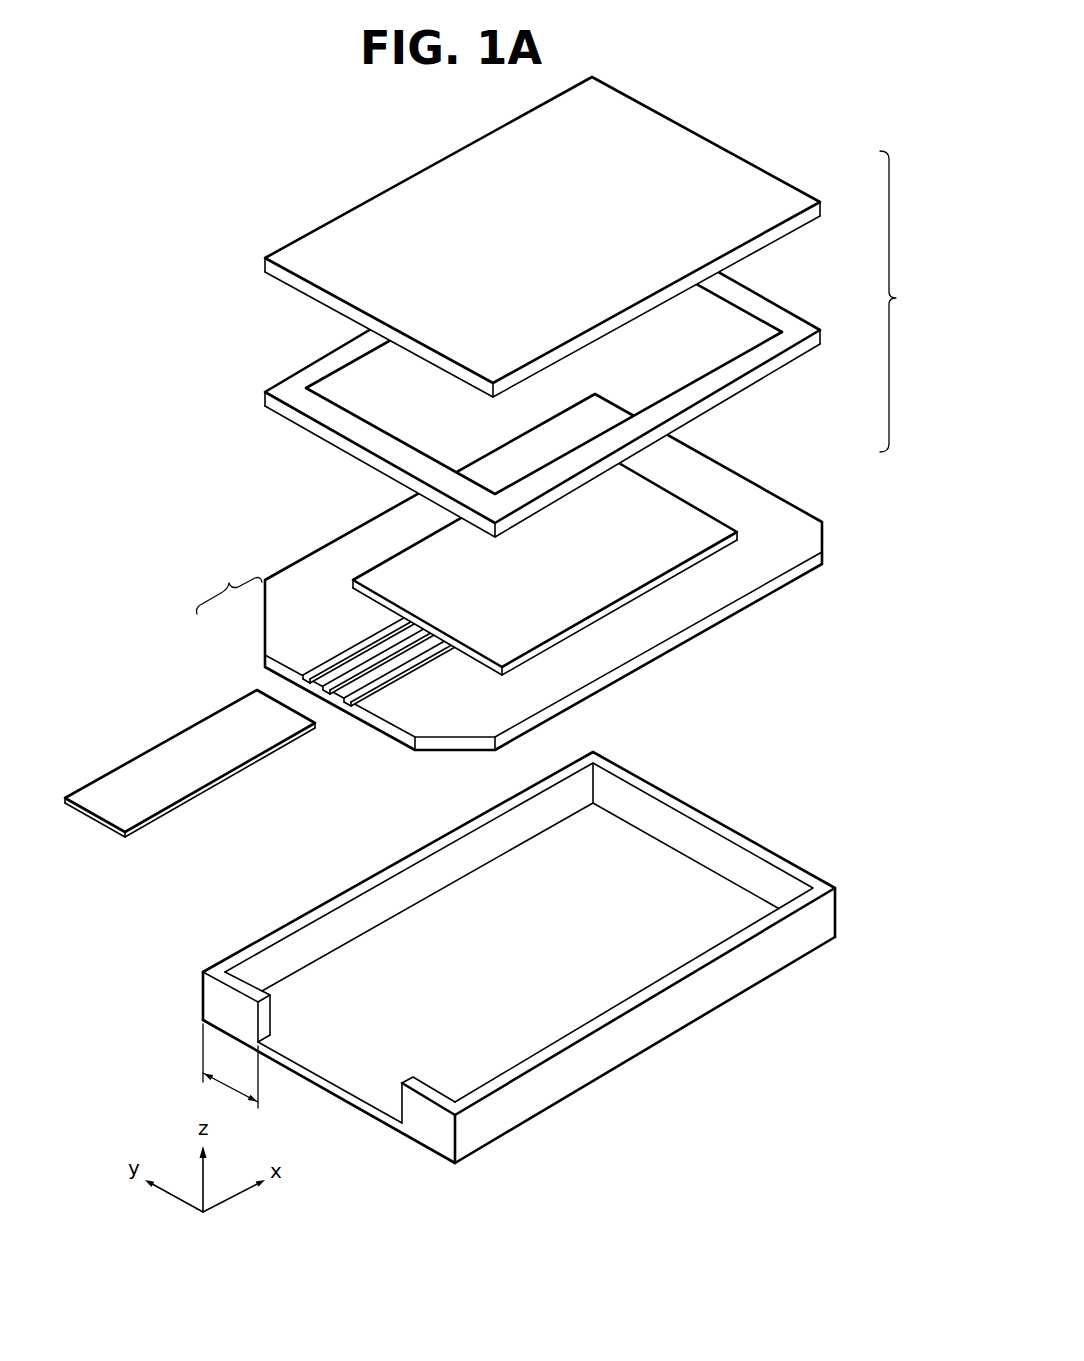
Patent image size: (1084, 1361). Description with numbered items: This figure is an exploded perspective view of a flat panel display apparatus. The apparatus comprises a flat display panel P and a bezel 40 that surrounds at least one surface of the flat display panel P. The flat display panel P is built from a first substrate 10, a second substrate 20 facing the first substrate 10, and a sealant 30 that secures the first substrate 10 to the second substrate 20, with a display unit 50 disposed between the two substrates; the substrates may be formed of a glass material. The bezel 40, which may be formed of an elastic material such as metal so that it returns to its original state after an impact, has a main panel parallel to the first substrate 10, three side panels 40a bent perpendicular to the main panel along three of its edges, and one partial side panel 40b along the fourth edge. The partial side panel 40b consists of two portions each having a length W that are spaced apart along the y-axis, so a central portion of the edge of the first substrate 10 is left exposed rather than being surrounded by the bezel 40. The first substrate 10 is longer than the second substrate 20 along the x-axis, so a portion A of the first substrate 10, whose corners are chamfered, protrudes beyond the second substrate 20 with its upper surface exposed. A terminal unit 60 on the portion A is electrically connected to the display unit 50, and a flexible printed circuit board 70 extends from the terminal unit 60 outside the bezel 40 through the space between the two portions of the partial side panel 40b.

The first substrate 10 is at (775, 505).
The second substrate 20 is at (780, 201).
The sealant 30 is at (780, 321).
The bezel 40 is at (519, 1024).
The side panel 40a is at (733, 835).
The partial side panel 40b is at (433, 1125).
The display unit 50 is at (617, 565).
The terminal unit 60 is at (347, 641).
The flexible printed circuit board 70 is at (172, 753).
The flat display panel P is at (899, 301).
The portion of the first substrate A is at (229, 590).
The length of partial side panel portions W is at (230, 1066).